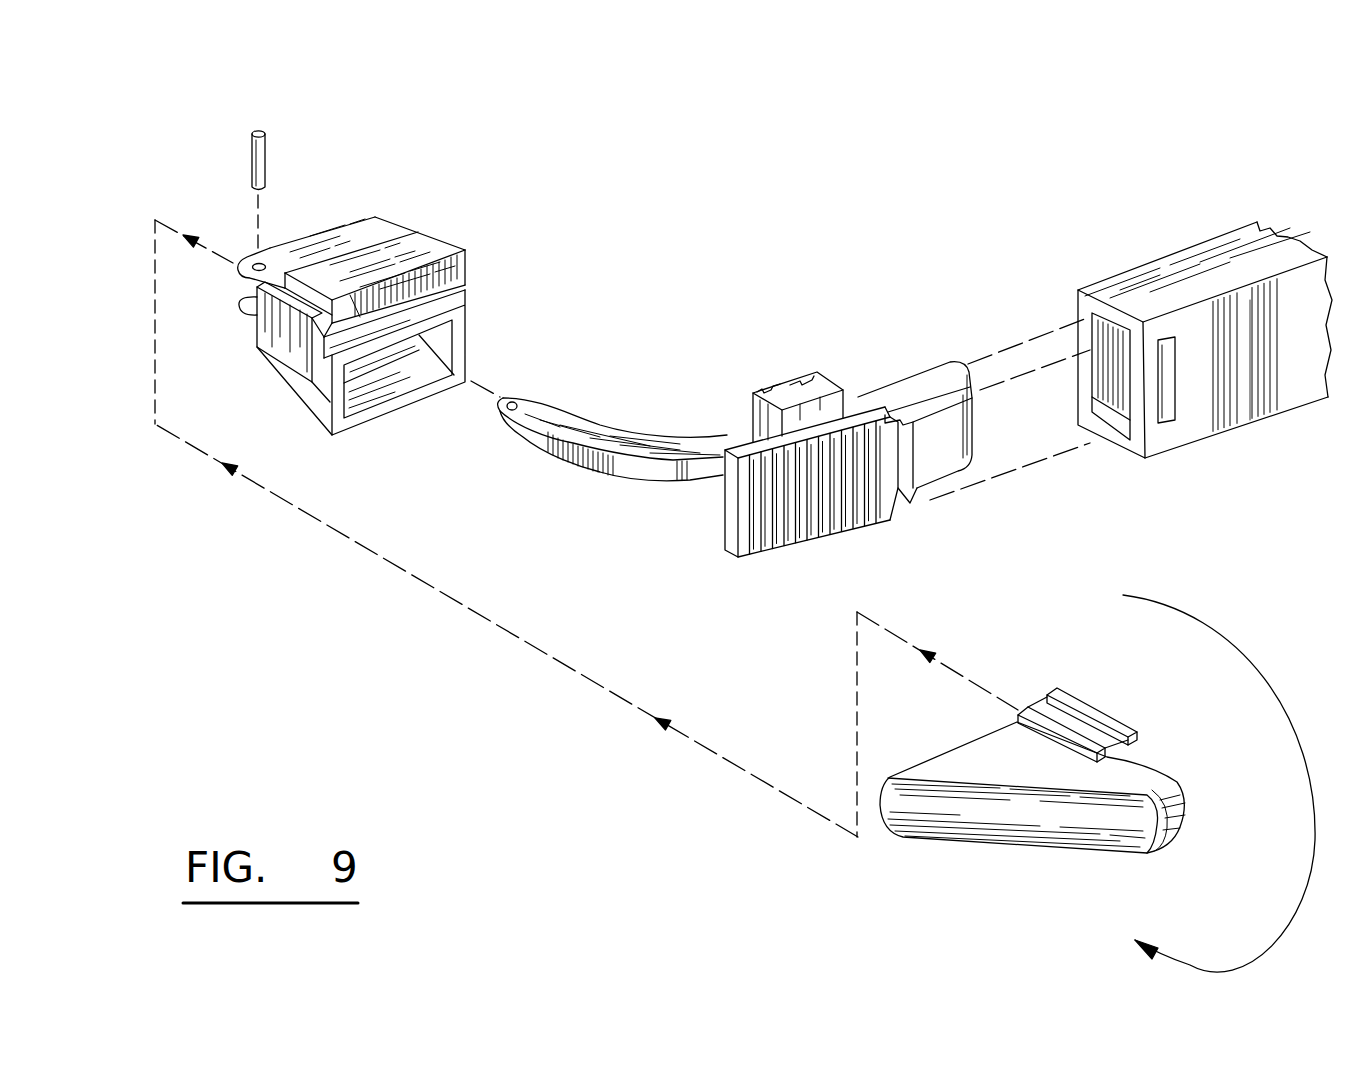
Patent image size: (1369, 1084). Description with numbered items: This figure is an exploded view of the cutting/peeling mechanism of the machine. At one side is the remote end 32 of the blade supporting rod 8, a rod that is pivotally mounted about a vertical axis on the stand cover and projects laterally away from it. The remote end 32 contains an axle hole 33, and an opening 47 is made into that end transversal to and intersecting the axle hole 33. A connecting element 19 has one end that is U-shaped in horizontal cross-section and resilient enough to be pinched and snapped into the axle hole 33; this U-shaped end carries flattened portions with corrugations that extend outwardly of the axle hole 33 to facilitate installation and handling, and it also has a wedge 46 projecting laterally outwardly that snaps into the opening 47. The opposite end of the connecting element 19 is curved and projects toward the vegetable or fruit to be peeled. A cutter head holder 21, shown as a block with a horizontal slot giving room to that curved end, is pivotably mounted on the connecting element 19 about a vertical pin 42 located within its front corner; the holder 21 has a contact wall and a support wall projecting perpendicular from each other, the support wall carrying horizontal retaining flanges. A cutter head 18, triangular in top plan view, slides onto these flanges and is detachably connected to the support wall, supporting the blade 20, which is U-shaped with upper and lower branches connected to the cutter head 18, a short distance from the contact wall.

The blade supporting rod 8 is at (1280, 397).
The cutter head 18 is at (952, 813).
The connecting element 19 is at (842, 450).
The blade 20 is at (1147, 762).
The cutter head holder 21 is at (407, 273).
The remote end 32 is at (1147, 270).
The axle hole 33 is at (1093, 417).
The vertical pin 42 is at (250, 152).
The wedge 46 is at (913, 470).
The opening 47 is at (1180, 400).